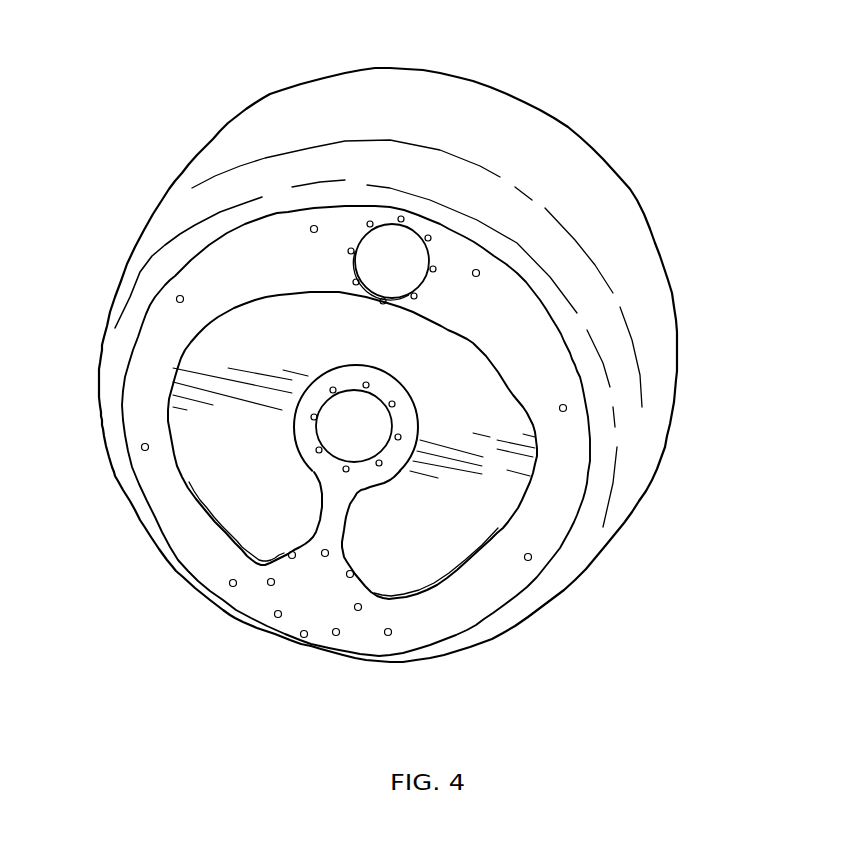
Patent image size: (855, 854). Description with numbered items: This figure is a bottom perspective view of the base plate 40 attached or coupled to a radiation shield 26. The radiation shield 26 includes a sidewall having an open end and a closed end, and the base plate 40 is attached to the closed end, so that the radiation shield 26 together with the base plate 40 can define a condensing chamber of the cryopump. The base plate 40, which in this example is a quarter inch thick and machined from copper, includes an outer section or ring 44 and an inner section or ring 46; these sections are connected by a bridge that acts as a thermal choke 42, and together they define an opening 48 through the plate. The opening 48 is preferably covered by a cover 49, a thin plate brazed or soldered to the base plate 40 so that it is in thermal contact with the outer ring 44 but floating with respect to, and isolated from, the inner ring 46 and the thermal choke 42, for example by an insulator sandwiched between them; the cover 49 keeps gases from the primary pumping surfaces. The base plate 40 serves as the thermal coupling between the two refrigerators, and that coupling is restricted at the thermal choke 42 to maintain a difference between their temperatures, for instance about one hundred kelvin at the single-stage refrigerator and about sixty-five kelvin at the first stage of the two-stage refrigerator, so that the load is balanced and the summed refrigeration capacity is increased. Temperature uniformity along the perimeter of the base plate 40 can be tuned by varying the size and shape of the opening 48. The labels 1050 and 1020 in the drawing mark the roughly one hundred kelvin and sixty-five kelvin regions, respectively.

The radiation shield 26 is at (634, 200).
The base plate 40 is at (208, 592).
The thermal choke 42 is at (327, 520).
The outer ring 44 is at (123, 383).
The inner ring 46 is at (292, 432).
The opening 48 is at (452, 526).
The cover 49 is at (497, 468).
The central aperture at 65K 1020 is at (385, 396).
The upper aperture at 100K 1050 is at (384, 265).